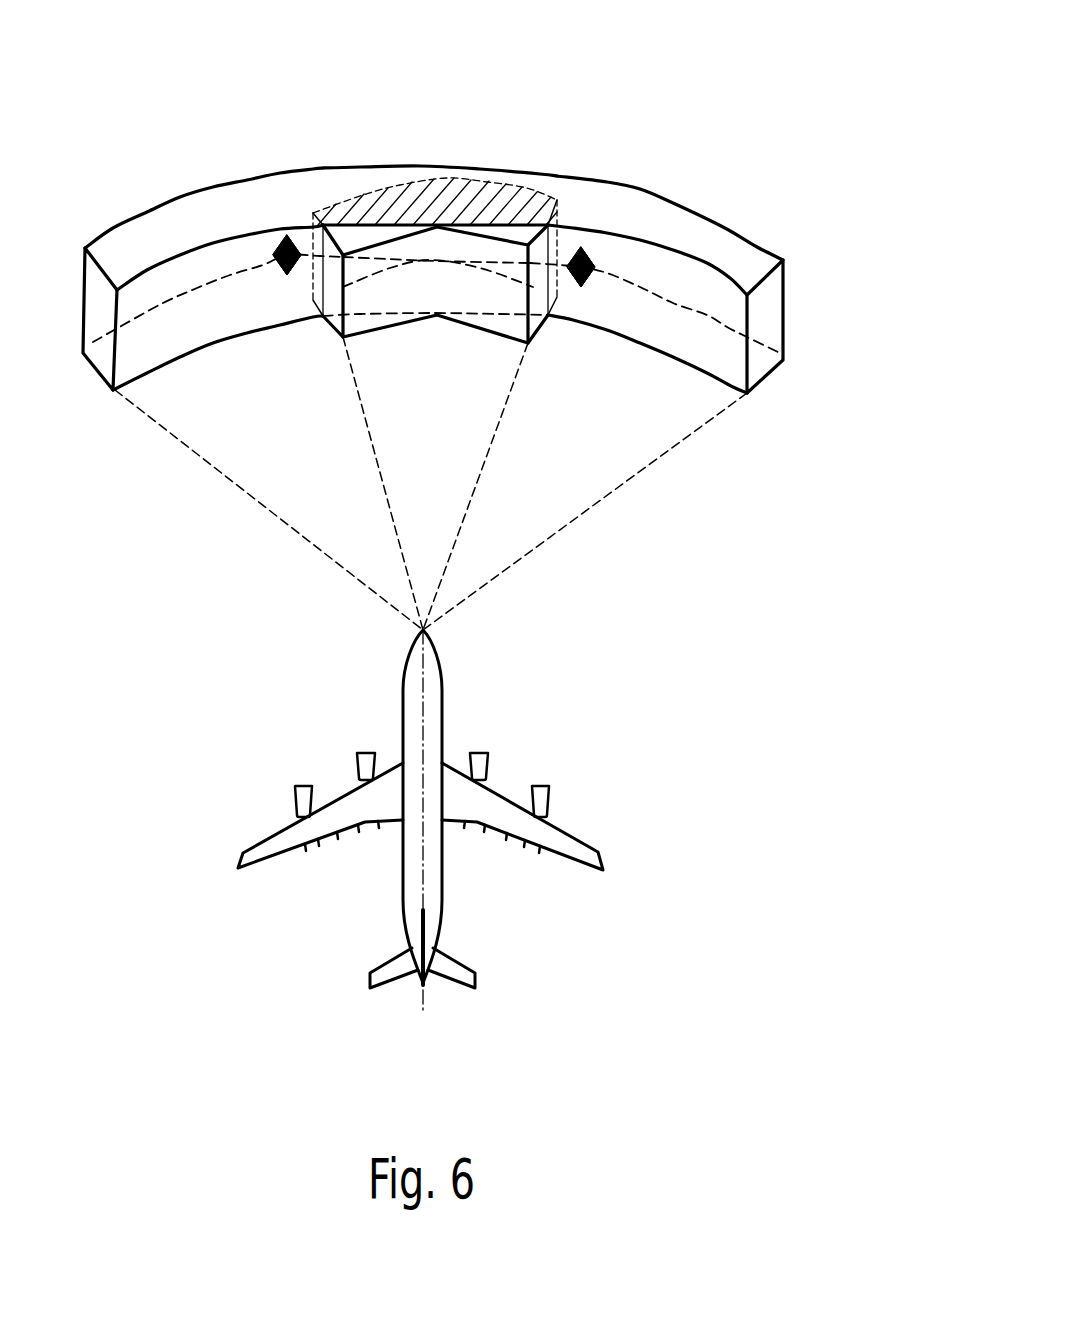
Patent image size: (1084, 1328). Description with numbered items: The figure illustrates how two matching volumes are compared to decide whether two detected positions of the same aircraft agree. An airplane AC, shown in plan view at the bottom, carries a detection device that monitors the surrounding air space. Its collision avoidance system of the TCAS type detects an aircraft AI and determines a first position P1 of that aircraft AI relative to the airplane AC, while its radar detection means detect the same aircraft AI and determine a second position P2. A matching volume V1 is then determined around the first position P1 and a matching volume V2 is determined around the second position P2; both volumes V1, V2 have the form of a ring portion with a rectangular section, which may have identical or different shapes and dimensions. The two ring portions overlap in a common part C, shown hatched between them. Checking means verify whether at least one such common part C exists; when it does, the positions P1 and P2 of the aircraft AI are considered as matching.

The aircraft AI is at (257, 220).
The matching volume V1 is at (282, 176).
The matching volume V2 is at (625, 182).
The common part C is at (460, 185).
The first position P1 is at (287, 275).
The second position P2 is at (583, 287).
The airplane AC is at (443, 883).